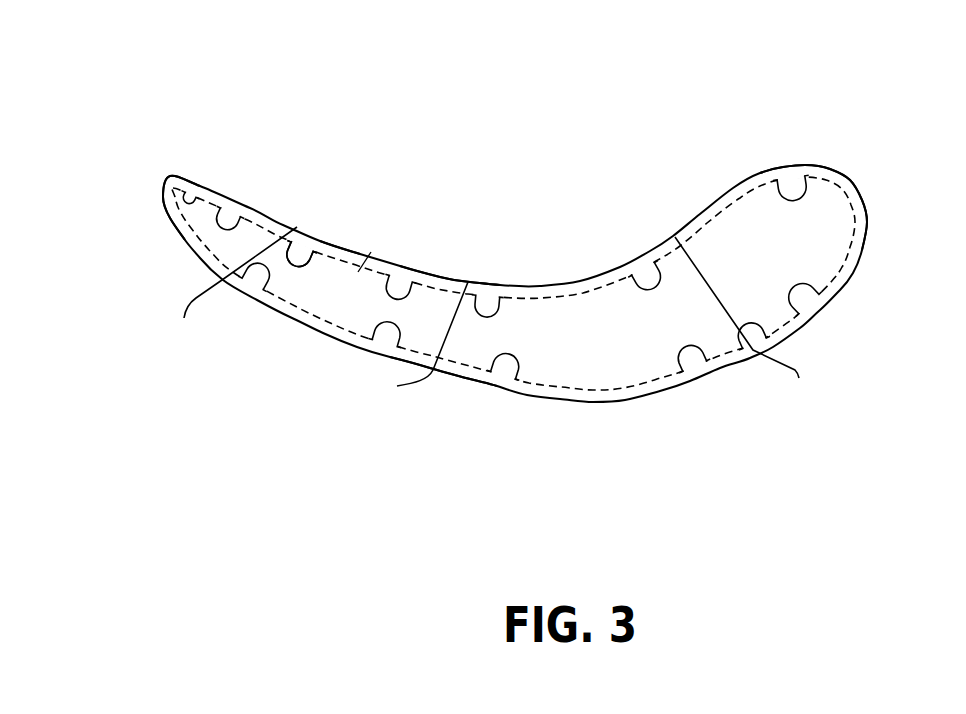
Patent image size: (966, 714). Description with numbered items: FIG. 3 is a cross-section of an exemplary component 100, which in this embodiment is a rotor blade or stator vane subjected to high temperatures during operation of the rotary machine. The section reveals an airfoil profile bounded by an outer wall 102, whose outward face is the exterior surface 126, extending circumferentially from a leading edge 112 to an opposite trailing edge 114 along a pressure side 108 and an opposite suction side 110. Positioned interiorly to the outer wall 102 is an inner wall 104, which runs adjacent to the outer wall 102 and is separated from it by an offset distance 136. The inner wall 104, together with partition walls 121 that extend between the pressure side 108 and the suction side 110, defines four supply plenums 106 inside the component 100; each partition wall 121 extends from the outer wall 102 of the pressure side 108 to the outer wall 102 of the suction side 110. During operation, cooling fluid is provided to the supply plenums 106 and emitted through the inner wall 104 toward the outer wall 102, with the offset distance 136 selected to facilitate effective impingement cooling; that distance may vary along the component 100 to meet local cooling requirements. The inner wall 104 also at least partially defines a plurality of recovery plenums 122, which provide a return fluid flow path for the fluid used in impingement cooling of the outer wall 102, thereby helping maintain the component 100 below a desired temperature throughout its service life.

The component 100 is at (824, 96).
The outer wall 102 is at (226, 190).
The inner wall 104 is at (338, 250).
The supply plenum 106 is at (197, 200).
The pressure side 108 is at (451, 279).
The suction side 110 is at (447, 378).
The leading edge 112 is at (840, 170).
The trailing edge 114 is at (167, 178).
The partition wall 121 is at (499, 316).
The recovery plenum 122 is at (305, 235).
The exterior surface 126 is at (266, 208).
The offset distance 136 is at (351, 288).